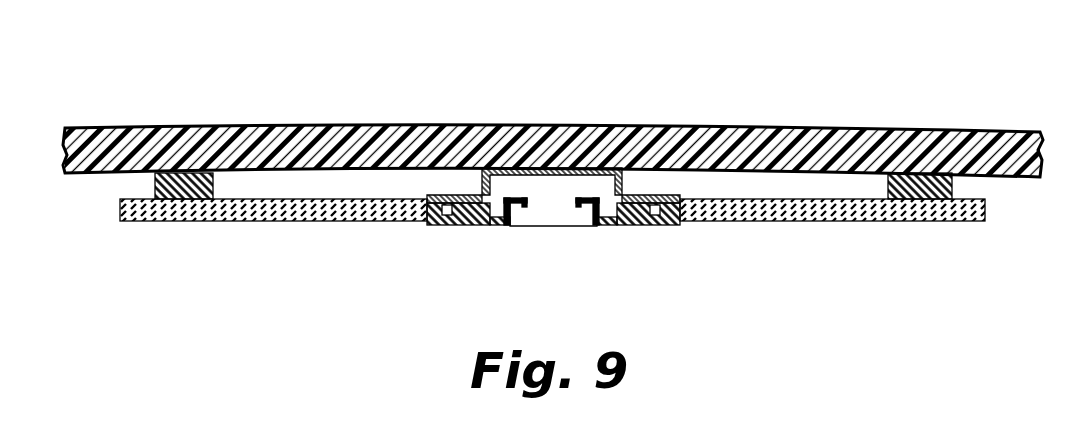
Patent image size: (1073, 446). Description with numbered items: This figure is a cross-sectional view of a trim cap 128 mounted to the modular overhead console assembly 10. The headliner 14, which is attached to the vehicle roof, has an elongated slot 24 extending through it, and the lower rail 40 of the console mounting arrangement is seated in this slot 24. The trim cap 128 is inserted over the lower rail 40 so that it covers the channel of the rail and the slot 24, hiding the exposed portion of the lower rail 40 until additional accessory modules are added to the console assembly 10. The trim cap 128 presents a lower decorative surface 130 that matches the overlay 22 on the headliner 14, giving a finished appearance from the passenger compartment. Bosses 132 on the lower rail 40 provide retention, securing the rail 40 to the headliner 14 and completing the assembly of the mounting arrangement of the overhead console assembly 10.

The overhead console assembly 10 is at (792, 74).
The headliner 14 is at (266, 190).
The overlay 22 is at (835, 222).
The elongated slot 24 is at (486, 196).
The lower rail 40 is at (495, 236).
The trim cap 128 is at (448, 236).
The lower decorative surface 130 is at (542, 228).
The bosses 132 is at (655, 228).